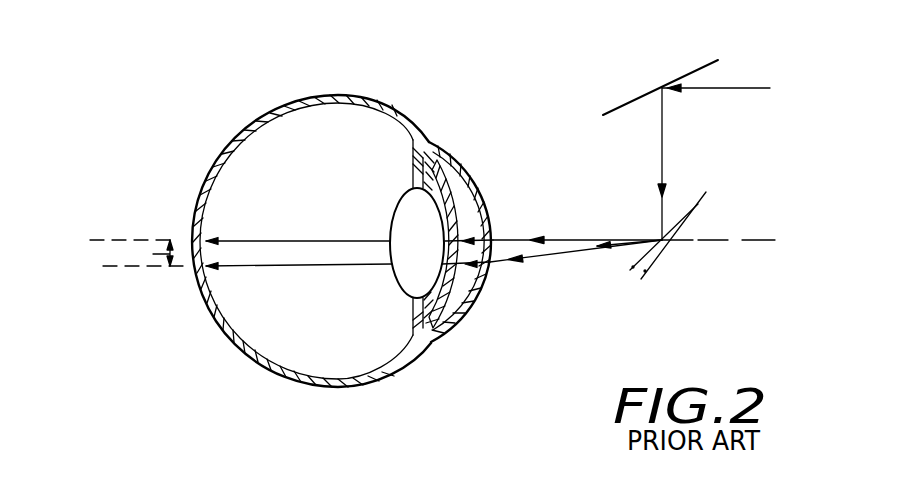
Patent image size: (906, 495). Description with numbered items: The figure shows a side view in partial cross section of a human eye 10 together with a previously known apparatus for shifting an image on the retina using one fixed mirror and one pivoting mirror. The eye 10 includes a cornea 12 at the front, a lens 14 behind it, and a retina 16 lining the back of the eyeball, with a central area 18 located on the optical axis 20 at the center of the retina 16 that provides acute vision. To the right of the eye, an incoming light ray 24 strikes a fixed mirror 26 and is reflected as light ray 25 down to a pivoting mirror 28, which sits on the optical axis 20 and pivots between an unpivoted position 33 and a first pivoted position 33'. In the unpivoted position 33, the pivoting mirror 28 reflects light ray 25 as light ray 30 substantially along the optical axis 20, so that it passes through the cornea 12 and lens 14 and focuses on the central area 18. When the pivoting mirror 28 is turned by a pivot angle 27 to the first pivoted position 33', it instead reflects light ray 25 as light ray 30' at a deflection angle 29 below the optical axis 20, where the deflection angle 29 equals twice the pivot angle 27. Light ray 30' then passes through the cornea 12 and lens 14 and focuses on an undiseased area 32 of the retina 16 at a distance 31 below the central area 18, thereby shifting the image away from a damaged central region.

The eye 10 is at (428, 113).
The cornea 12 is at (484, 202).
The lens 14 is at (413, 262).
The retina 16 is at (229, 153).
The central area 18 is at (206, 238).
The optical axis 20 is at (757, 243).
The light ray 24 is at (736, 88).
The light ray 25 is at (690, 207).
The fixed mirror 26 is at (688, 74).
The pivot angle 27 is at (706, 192).
The pivoting mirror 28 is at (699, 206).
The deflection angle 29 is at (588, 250).
The light ray 30 is at (593, 210).
The light ray 30' is at (576, 282).
The distance 31 is at (153, 254).
The undiseased area 32 is at (212, 276).
The unpivoted position 33 is at (628, 295).
The first pivoted position 33' is at (674, 285).